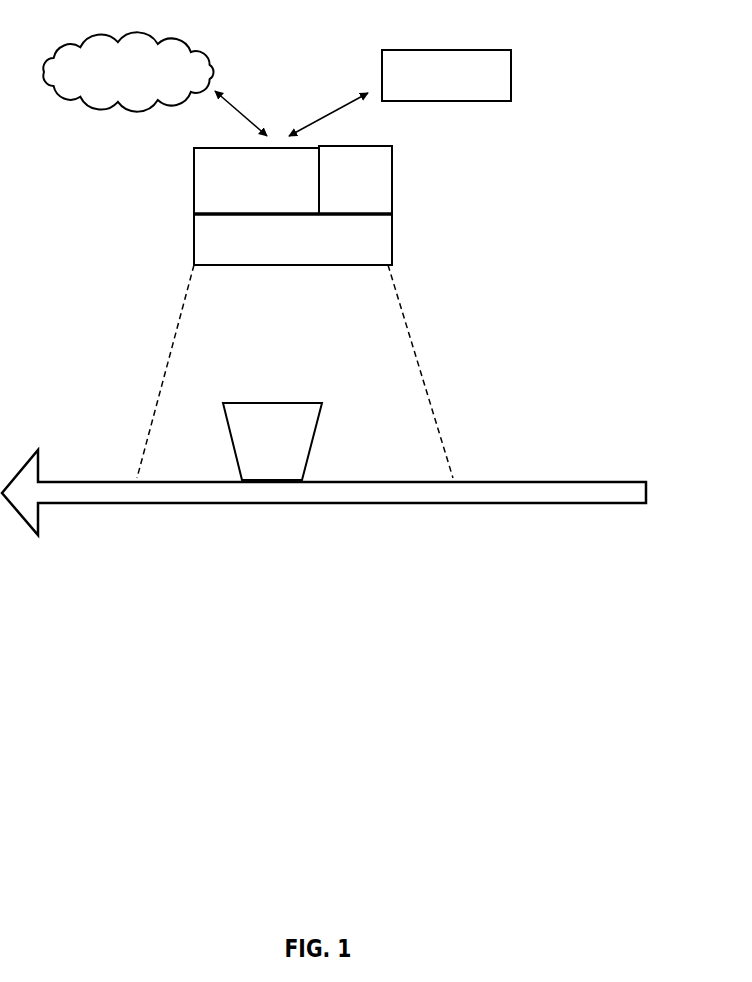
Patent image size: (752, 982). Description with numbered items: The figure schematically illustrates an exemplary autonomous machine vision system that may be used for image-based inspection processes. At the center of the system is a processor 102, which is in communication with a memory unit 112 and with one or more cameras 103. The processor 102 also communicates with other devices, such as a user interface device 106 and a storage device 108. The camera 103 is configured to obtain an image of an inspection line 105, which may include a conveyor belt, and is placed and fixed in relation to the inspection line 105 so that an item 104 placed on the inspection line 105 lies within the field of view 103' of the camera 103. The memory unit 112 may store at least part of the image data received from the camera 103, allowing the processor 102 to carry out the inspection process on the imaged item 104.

The storage device 108 is at (109, 82).
The user interface device 106 is at (421, 90).
The processor 102 is at (220, 194).
The memory unit 112 is at (336, 193).
The camera 103 is at (293, 239).
The field of view 103' is at (253, 371).
The item 104 is at (251, 450).
The inspection line 105 is at (197, 492).